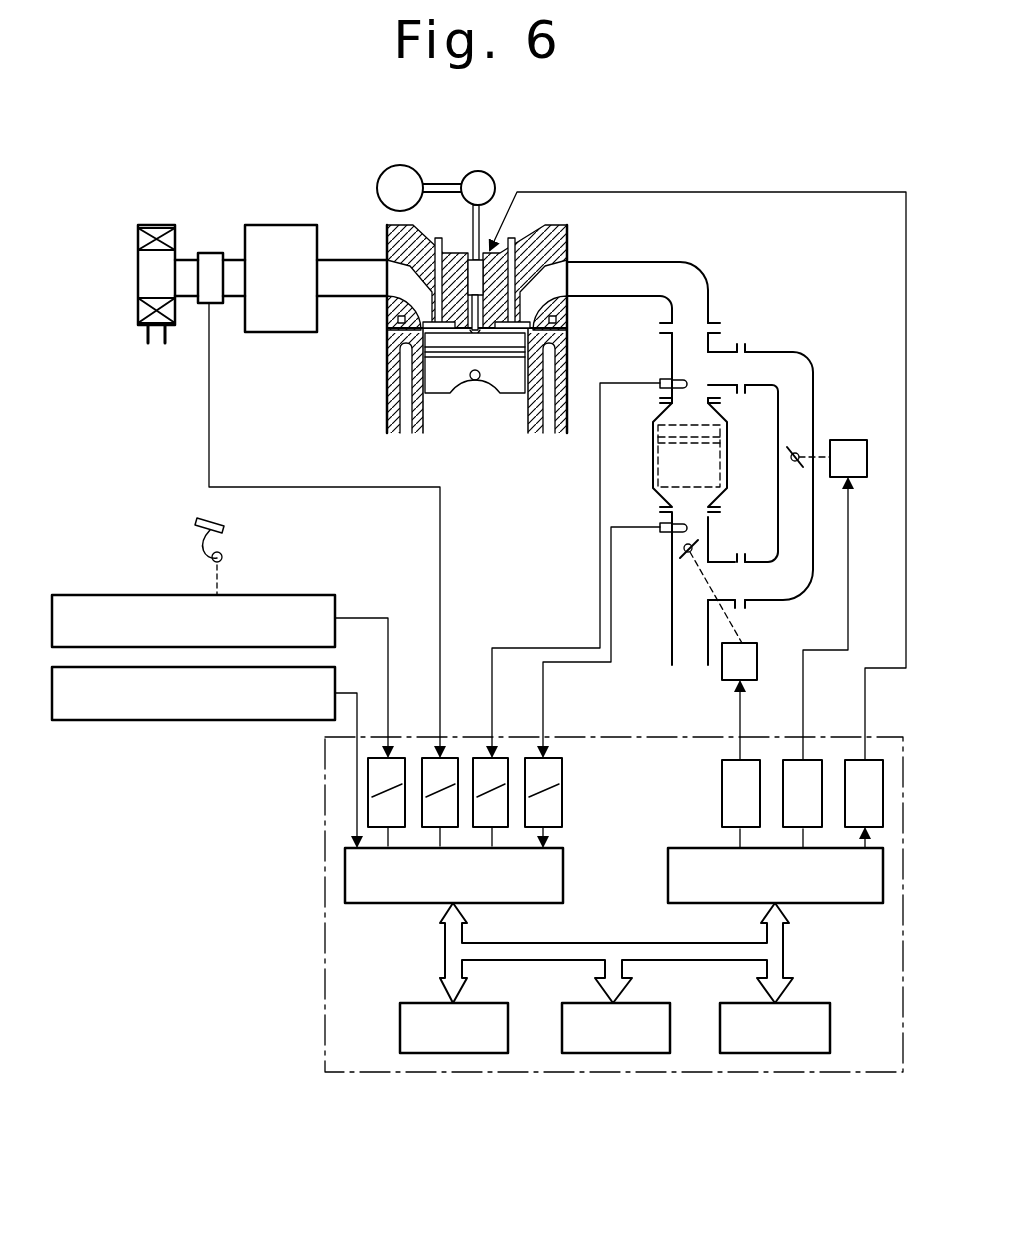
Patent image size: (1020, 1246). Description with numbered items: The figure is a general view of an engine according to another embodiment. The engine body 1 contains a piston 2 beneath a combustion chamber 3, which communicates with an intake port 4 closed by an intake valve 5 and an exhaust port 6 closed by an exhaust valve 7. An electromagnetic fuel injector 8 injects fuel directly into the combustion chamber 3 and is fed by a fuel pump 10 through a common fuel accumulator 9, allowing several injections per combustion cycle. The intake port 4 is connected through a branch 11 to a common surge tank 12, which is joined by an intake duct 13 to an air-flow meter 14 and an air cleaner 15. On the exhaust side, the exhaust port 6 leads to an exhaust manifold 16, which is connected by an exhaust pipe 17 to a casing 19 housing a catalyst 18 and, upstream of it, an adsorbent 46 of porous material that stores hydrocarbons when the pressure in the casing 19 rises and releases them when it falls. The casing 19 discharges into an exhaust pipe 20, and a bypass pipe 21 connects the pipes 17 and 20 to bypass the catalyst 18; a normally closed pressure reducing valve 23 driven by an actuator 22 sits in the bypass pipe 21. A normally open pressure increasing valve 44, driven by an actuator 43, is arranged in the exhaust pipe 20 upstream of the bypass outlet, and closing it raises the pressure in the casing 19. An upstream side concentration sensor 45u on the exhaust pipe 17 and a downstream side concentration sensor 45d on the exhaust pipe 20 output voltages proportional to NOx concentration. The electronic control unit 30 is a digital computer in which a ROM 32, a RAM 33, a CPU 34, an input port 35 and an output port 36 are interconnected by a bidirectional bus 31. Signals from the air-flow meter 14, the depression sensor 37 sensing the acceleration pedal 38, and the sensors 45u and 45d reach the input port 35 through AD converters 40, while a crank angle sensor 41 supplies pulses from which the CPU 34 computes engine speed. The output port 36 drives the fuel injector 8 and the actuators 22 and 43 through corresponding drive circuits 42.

The engine body 1 is at (451, 325).
The piston 2 is at (440, 395).
The combustion chamber 3 is at (390, 337).
The intake port 4 is at (398, 272).
The intake valve 5 is at (402, 262).
The exhaust port 6 is at (570, 250).
The exhaust valve 7 is at (515, 262).
The fuel injector 8 is at (468, 262).
The fuel accumulator 9 is at (480, 172).
The fuel pump 10 is at (378, 190).
The branch 11 is at (333, 260).
The surge tank 12 is at (280, 225).
The intake duct 13 is at (236, 260).
The air-flow meter 14 is at (208, 253).
The air cleaner 15 is at (158, 225).
The exhaust manifold 16 is at (663, 262).
The exhaust pipe 17 is at (672, 338).
The catalyst 18 is at (662, 470).
The casing 19 is at (660, 410).
The exhaust pipe 20 is at (672, 595).
The bypass pipe 21 is at (800, 352).
The actuator 22 is at (850, 440).
The pressure reducing valve 23 is at (790, 456).
The electronic control unit 30 is at (325, 800).
The bidirectional bus 31 is at (445, 950).
The read-only memory 32 is at (400, 1020).
The random-access memory 33 is at (562, 1022).
The CPU 34 is at (720, 1022).
The input port 35 is at (563, 882).
The output port 36 is at (668, 878).
The depression sensor 37 is at (290, 595).
The acceleration pedal 38 is at (218, 553).
The AD converter 40 is at (440, 758).
The crank angle sensor 41 is at (200, 720).
The drive circuit 42 is at (803, 760).
The actuator 43 is at (757, 660).
The pressure increasing valve 44 is at (695, 548).
The upstream side concentration sensor 45u is at (660, 383).
The downstream side concentration sensor 45d is at (660, 527).
The adsorbent 46 is at (655, 421).